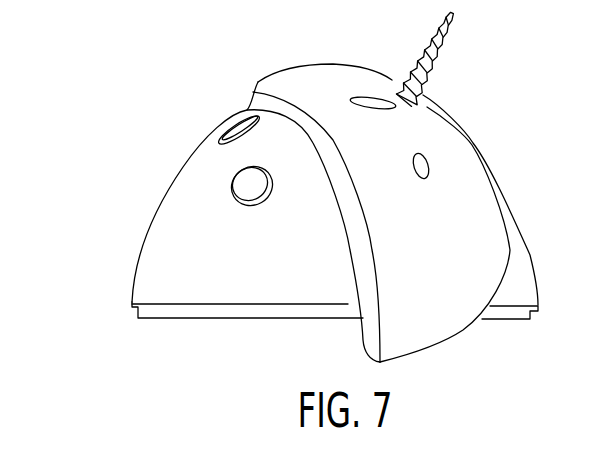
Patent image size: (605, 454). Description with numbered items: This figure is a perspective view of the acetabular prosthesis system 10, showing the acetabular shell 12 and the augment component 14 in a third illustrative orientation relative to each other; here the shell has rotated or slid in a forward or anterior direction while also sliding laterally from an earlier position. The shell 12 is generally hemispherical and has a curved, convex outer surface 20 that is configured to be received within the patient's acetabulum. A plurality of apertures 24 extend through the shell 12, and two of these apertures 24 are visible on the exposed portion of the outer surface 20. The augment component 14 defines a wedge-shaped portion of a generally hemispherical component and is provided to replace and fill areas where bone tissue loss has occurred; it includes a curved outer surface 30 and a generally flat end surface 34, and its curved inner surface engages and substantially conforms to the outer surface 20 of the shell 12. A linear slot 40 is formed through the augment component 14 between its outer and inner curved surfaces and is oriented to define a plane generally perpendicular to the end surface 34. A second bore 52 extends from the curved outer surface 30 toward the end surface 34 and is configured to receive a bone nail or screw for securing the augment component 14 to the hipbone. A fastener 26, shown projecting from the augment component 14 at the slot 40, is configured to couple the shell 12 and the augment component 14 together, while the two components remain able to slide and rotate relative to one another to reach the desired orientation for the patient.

The acetabular prosthesis system 10 is at (158, 141).
The acetabular shell 12 is at (161, 199).
The augment component 14 is at (505, 155).
The outer surface 20 is at (220, 283).
The apertures 24 is at (233, 140).
The fastener 26 is at (450, 50).
The outer surface 30 is at (483, 252).
The end surface 34 is at (438, 347).
The slot 40 is at (360, 100).
The second bore 52 is at (418, 172).